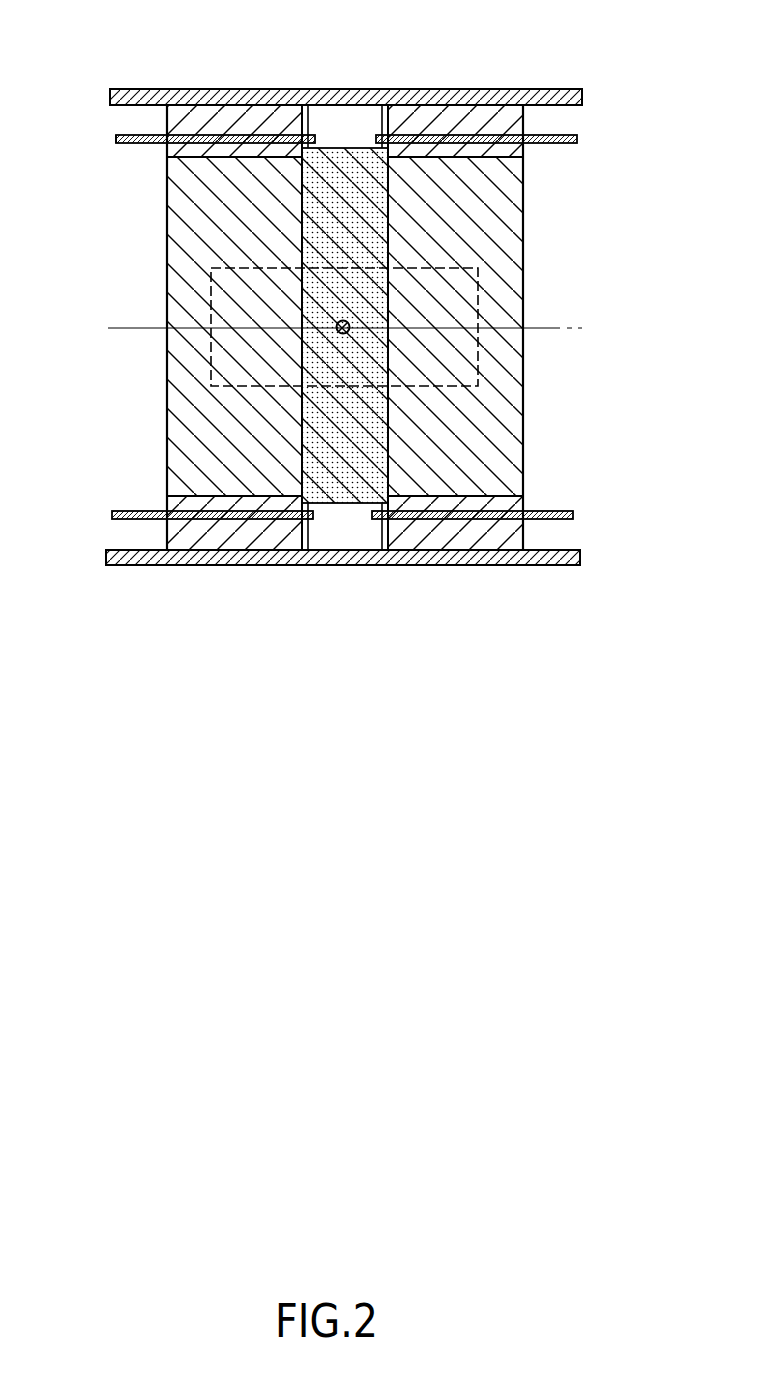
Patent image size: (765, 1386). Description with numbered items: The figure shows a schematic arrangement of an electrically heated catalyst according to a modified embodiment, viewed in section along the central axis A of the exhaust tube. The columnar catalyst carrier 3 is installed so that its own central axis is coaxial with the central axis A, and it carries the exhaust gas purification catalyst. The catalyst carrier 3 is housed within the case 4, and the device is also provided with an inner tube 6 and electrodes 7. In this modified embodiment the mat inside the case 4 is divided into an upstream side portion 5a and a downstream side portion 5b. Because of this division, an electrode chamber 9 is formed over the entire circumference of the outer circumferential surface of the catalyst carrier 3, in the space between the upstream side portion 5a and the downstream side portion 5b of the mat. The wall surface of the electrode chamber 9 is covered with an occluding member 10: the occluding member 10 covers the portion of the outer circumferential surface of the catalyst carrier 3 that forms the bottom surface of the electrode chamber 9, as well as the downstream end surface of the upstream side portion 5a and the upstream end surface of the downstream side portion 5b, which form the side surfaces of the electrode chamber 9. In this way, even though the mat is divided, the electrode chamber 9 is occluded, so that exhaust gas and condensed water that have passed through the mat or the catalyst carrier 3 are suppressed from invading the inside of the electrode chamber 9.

The catalyst carrier 3 is at (165, 422).
The case 4 is at (212, 88).
The upstream side portion 5a is at (173, 121).
The downstream side portion 5b is at (517, 123).
The inner tube 6 is at (123, 121).
The electrodes 7 is at (338, 322).
The electrode chamber 9 is at (348, 133).
The occluding member 10 is at (362, 238).
The central axis A is at (560, 329).